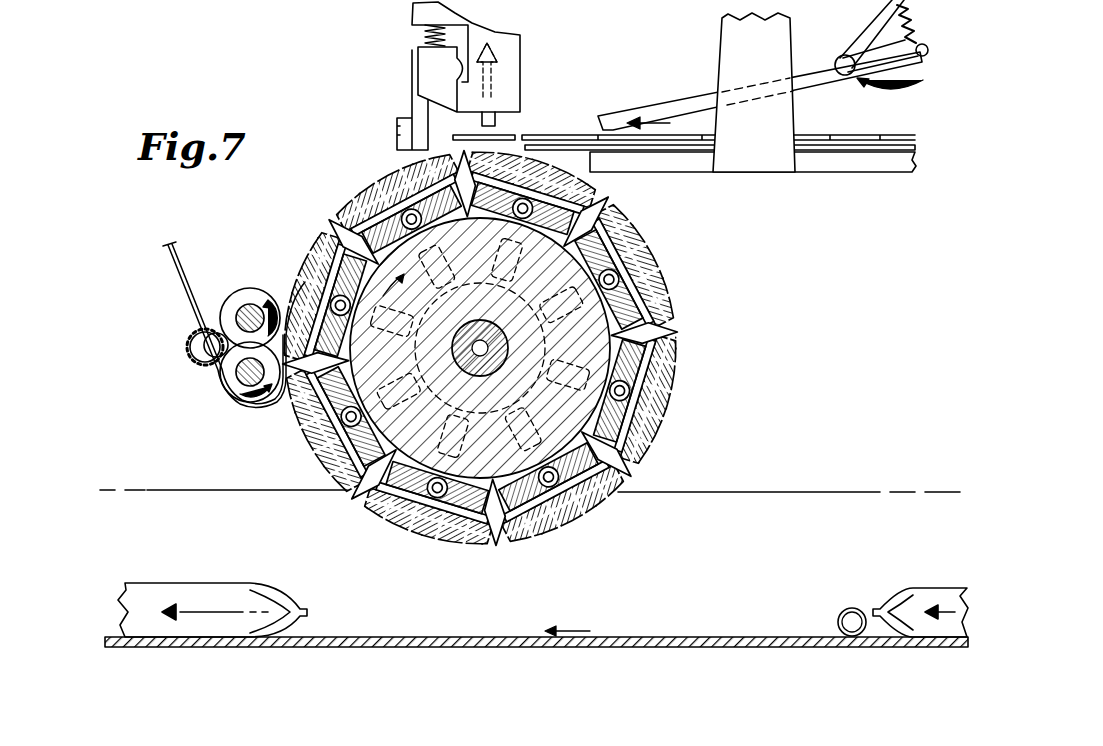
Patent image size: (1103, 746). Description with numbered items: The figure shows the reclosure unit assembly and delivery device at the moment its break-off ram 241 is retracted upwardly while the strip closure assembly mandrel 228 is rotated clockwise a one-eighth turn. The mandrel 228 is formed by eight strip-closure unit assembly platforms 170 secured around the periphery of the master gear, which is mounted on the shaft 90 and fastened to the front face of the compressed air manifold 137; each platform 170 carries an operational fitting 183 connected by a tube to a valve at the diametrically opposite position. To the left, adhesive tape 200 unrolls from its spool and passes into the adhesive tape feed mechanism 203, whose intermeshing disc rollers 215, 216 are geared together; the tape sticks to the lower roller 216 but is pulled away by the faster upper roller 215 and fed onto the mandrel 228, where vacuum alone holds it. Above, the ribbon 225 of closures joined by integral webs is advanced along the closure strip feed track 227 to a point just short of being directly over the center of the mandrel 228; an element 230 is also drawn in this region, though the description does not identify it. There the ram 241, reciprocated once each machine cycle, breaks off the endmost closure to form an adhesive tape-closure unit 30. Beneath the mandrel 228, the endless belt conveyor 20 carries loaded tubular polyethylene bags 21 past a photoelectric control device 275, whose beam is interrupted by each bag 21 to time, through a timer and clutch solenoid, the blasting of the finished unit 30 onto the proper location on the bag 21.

The endless belt conveyor 20 is at (727, 637).
The tubular polyethylene bag 21 is at (213, 584).
The adhesive tape-closure unit 30 is at (555, 160).
The shaft 90 is at (500, 348).
The compressed air manifold 137 is at (600, 345).
The strip-closure unit assembly platform 170 is at (368, 178).
The operational fitting 183 is at (423, 174).
The adhesive tape 200 is at (188, 278).
The adhesive tape feed mechanism 203 is at (207, 372).
The roller 215 is at (255, 298).
The roller 216 is at (240, 400).
The ribbon 225 is at (560, 135).
The closure strip feed track 227 is at (850, 172).
The strip closure assembly mandrel 228 is at (517, 368).
The lever arm 230 is at (660, 105).
The break-off ram 241 is at (505, 52).
The photoelectric control device 275 is at (838, 620).